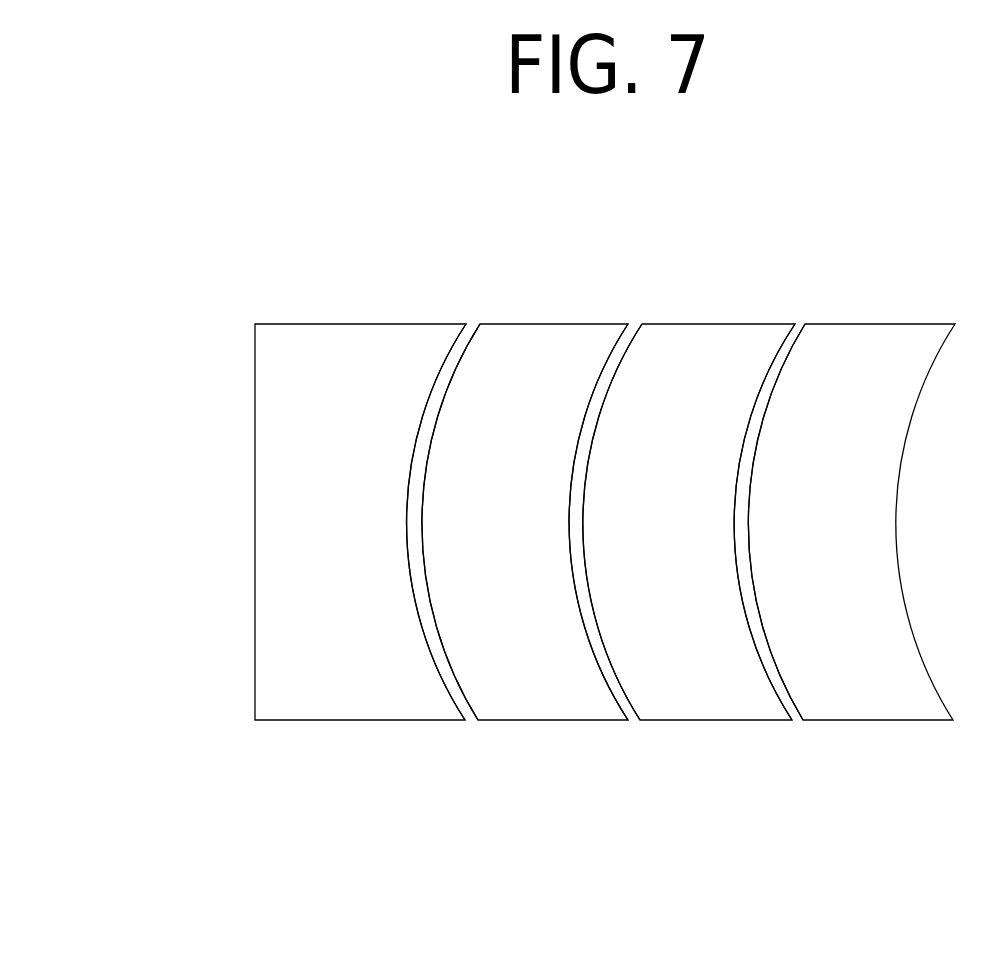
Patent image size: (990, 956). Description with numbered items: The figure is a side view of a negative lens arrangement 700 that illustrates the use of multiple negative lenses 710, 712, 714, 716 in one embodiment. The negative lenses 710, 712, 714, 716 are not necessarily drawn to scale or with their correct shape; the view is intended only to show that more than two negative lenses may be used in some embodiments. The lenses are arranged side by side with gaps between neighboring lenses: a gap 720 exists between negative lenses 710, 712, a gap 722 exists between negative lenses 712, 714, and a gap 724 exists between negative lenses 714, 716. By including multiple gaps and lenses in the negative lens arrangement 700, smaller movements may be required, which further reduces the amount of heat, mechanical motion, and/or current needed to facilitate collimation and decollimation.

The negative lens arrangement 700 is at (140, 155).
The negative lens 710 is at (352, 695).
The negative lens 712 is at (536, 697).
The negative lens 714 is at (710, 696).
The negative lens 716 is at (860, 697).
The gap 720 is at (470, 333).
The gap 722 is at (630, 333).
The gap 724 is at (793, 333).